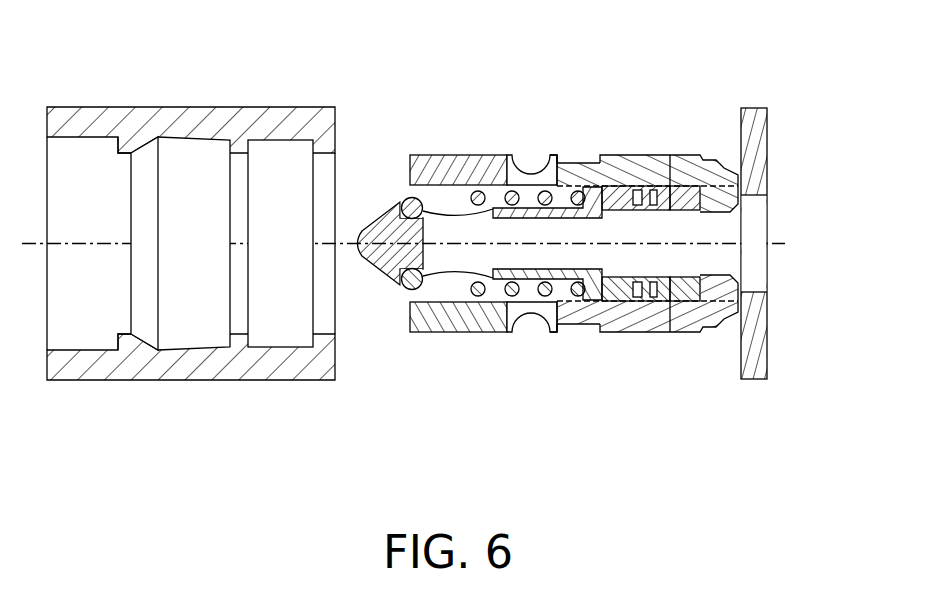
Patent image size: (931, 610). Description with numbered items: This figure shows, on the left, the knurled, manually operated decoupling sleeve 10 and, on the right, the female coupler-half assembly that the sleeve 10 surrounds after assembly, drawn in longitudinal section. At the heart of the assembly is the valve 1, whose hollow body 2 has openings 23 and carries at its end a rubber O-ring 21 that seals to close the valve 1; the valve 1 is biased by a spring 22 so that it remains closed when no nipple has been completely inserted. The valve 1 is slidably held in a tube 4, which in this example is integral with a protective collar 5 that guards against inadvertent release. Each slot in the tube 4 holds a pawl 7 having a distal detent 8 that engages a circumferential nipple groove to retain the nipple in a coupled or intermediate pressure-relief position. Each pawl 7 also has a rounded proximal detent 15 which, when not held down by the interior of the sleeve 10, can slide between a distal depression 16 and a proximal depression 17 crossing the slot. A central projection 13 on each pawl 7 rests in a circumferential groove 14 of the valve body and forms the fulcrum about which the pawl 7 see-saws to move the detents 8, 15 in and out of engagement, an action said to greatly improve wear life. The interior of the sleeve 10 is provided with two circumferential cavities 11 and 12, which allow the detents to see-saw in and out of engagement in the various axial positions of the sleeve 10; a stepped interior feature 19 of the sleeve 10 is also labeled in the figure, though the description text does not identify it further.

The valve 1 is at (532, 255).
The hollow body 2 is at (487, 252).
The tube 4 is at (445, 168).
The protective collar 5 is at (762, 343).
The pawl 7 is at (643, 175).
The distal detent 8 is at (755, 215).
The sleeve 10 is at (145, 363).
The circumferential cavity 11 is at (287, 338).
The circumferential cavity 12 is at (190, 337).
The central projection 13 is at (620, 292).
The circumferential groove 14 is at (670, 295).
The proximal detent 15 is at (578, 155).
The distal depression 16 is at (570, 153).
The proximal depression 17 is at (518, 158).
The housing shoulder 19 is at (142, 143).
The rubber O-ring 21 is at (398, 285).
The spring 22 is at (502, 290).
The openings 23 is at (448, 227).